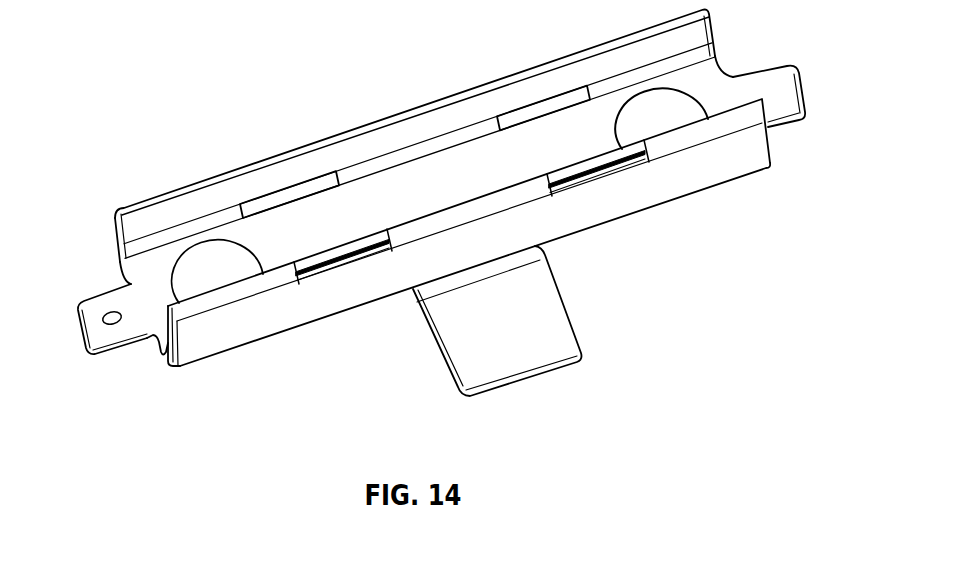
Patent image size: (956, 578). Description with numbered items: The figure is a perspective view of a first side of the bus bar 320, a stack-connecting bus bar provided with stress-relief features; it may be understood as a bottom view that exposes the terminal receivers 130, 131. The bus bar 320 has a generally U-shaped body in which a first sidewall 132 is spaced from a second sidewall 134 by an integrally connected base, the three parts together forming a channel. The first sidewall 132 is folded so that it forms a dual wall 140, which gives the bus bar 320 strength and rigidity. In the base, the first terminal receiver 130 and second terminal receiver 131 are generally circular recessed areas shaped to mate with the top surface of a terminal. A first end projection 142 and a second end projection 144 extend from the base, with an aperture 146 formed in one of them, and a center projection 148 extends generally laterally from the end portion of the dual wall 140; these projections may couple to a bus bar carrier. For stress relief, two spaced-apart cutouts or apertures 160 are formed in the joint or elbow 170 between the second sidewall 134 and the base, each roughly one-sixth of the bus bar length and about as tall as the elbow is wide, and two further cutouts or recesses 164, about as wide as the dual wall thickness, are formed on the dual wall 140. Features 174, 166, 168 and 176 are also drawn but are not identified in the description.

The bus bar 320 is at (289, 58).
The second sidewall 134 is at (495, 80).
The joint or elbow 170 is at (373, 163).
The cutouts or apertures 160 is at (267, 205).
The first terminal receiver 130 is at (223, 262).
The second terminal receiver 131 is at (690, 113).
The first sidewall 132 is at (740, 165).
The top face of front rail 174 is at (753, 123).
The cutouts or recesses 164 is at (342, 268).
The left notch edge 166 is at (128, 278).
The first end projection 142 is at (100, 342).
The aperture 146 is at (110, 316).
The dual wall 140 is at (156, 340).
The right notch edge 168 is at (727, 64).
The second end projection 144 is at (792, 90).
The center projection 148 is at (552, 358).
The bend 176 is at (425, 290).